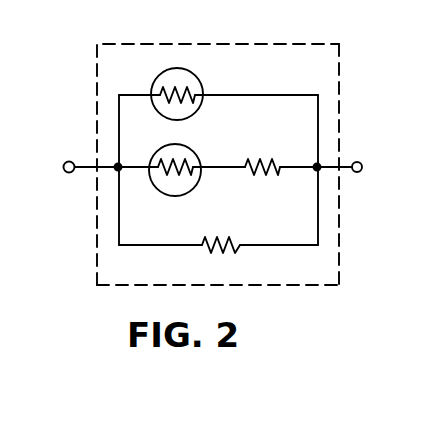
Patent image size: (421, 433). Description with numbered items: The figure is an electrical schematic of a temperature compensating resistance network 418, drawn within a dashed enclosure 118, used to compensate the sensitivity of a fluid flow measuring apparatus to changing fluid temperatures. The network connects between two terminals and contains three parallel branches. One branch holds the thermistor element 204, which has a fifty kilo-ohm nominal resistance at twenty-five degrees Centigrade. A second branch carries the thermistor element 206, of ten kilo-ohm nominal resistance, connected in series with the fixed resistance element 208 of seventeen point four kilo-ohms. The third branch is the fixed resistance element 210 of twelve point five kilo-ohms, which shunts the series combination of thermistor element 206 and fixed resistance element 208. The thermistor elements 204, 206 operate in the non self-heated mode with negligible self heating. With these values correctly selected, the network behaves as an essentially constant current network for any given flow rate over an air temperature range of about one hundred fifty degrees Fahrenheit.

The sensing element / detector block 118 is at (346, 45).
The compensation network 418 is at (339, 66).
The thermistor element 204 is at (199, 84).
The thermistor element 206 is at (191, 147).
The fixed resistance element 208 is at (277, 173).
The fixed resistance element 210 is at (240, 250).